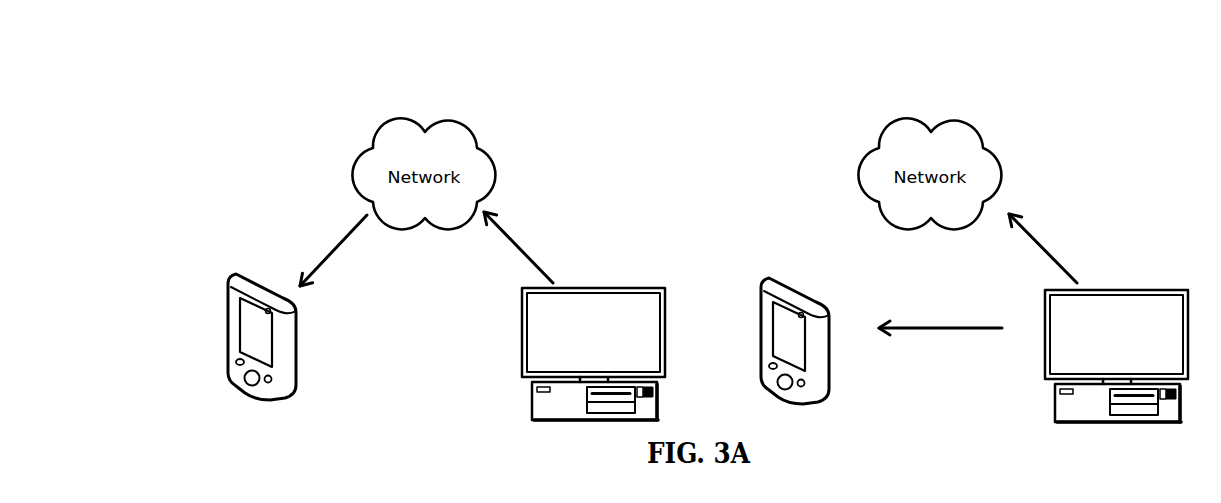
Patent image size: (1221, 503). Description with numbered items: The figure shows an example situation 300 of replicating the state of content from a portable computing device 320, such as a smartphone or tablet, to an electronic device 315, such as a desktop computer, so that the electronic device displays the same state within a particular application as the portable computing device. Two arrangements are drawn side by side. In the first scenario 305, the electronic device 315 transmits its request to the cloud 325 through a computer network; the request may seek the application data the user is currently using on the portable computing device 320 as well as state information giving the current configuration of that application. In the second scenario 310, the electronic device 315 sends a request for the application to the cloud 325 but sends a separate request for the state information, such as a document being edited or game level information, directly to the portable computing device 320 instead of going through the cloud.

The example situation 300 is at (165, 188).
The first scenario 305 is at (580, 168).
The second scenario 310 is at (1102, 167).
The electronic device 315 is at (605, 289).
The portable computing device 320 is at (268, 282).
The cloud 325 is at (353, 178).